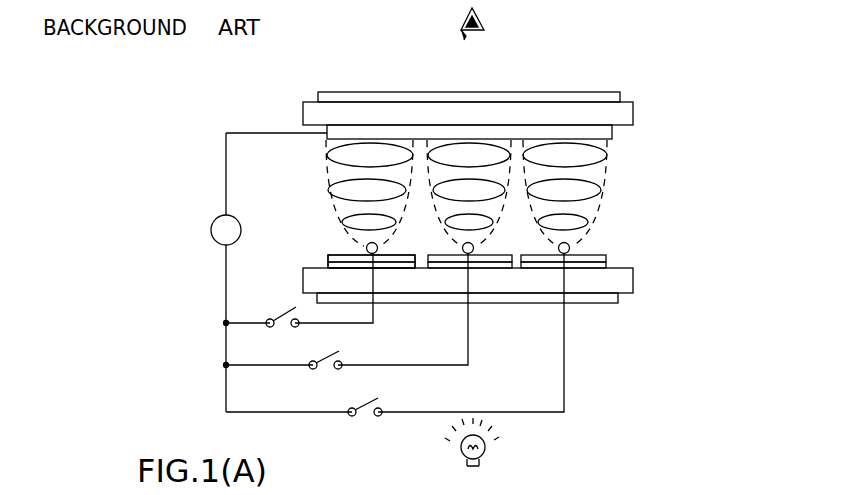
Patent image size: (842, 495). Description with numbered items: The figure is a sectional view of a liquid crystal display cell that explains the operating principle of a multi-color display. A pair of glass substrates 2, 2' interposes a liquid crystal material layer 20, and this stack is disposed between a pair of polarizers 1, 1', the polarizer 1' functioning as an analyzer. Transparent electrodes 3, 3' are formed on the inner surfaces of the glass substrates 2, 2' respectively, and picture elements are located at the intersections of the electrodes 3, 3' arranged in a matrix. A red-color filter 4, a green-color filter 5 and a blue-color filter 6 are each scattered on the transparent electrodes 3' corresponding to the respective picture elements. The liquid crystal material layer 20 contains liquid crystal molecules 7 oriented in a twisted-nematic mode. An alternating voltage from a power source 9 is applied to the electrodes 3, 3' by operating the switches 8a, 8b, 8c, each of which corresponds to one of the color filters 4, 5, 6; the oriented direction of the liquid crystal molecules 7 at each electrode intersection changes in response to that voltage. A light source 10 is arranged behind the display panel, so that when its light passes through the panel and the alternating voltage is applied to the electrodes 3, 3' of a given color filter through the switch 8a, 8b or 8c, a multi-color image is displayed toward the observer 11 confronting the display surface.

The polarizer 1 is at (505, 80).
The glass substrate 2 is at (498, 110).
The transparent electrode 3 is at (510, 137).
The liquid crystal molecules 7 is at (605, 155).
The liquid crystal material layer 20 is at (342, 230).
The green-color filter 5 is at (482, 252).
The red-color filter 4 is at (332, 257).
The blue-color filter 6 is at (600, 262).
The transparent electrode 3' is at (513, 256).
The glass substrate 2' is at (500, 280).
The polarizer 1' is at (507, 306).
The power source 9 is at (211, 232).
The switch 8a is at (270, 318).
The switch 8b is at (345, 358).
The switch 8c is at (378, 404).
The light source 10 is at (486, 447).
The observer 11 is at (484, 14).